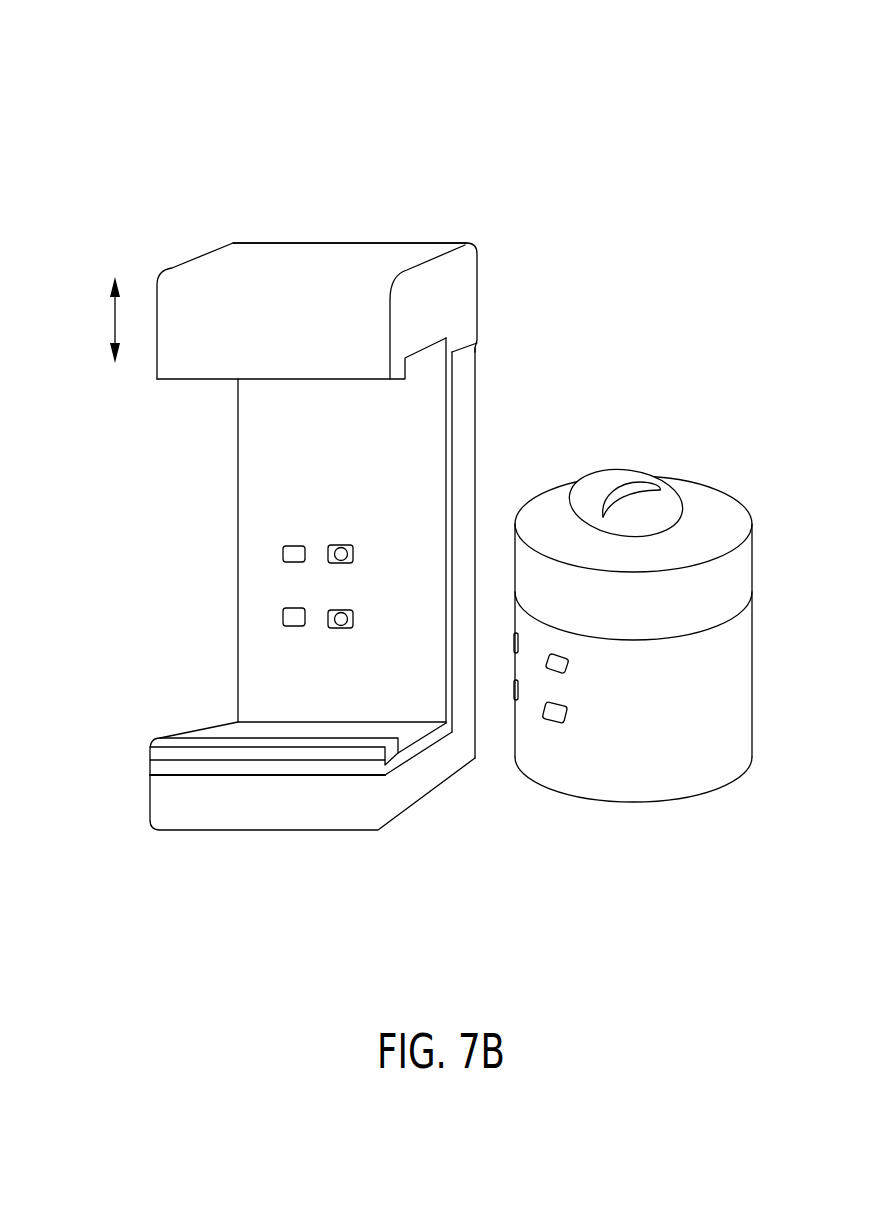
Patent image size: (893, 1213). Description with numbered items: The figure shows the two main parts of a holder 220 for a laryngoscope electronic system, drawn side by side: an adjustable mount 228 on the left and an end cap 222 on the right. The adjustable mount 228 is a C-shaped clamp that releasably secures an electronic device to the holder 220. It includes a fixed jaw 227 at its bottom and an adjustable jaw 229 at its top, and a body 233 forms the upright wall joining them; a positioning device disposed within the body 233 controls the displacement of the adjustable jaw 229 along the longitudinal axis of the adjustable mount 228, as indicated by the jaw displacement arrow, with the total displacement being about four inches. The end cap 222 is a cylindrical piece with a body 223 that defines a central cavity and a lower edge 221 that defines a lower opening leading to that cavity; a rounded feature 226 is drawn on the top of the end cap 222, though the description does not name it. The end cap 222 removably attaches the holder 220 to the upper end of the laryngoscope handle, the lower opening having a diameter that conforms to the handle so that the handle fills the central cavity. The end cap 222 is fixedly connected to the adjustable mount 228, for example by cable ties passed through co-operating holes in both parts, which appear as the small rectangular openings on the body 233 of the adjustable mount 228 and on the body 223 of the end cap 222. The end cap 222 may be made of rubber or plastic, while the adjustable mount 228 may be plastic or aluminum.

The holder 220 is at (184, 94).
The lower edge 221 is at (600, 800).
The end cap 222 is at (727, 492).
The body 223 is at (644, 700).
The knob 226 is at (598, 473).
The fixed jaw 227 is at (207, 830).
The adjustable mount 228 is at (463, 244).
The adjustable jaw 229 is at (198, 358).
The body 233 is at (366, 470).